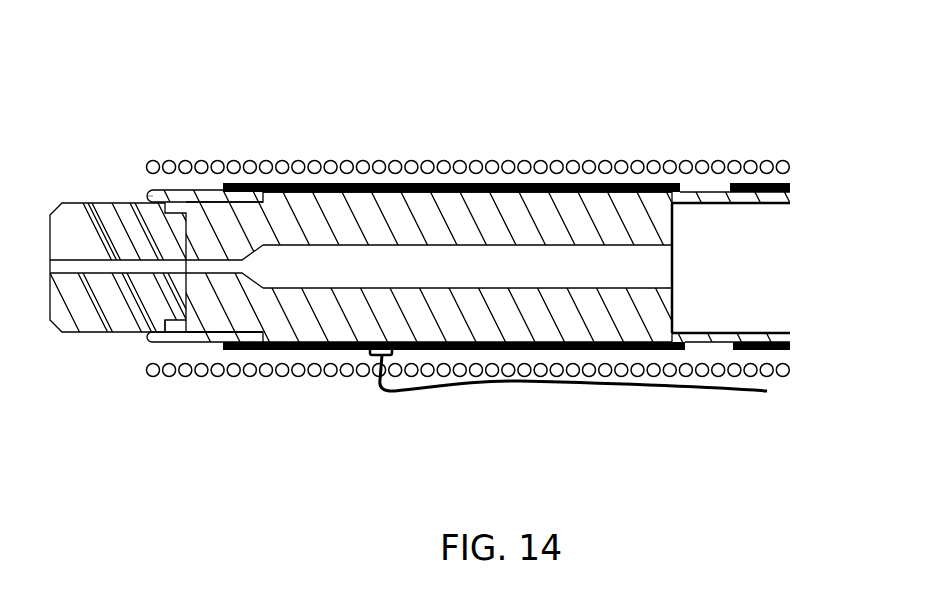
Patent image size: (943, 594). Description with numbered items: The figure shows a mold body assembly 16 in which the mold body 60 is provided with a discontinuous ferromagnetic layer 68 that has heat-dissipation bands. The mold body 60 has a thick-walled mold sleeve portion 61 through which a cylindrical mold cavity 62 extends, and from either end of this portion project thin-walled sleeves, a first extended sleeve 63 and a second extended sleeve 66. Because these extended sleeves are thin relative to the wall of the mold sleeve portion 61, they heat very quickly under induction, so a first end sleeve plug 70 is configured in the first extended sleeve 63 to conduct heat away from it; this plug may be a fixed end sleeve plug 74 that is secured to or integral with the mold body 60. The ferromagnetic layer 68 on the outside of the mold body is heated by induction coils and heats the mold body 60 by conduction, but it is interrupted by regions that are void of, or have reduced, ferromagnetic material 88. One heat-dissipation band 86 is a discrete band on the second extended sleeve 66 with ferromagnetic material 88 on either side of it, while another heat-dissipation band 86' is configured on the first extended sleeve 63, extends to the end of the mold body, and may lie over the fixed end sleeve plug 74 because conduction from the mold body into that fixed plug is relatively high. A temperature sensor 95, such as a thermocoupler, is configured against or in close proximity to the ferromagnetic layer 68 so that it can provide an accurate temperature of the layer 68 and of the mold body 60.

The mold body assembly 16 is at (372, 110).
The mold body 60 is at (465, 220).
The mold sleeve portion 61 is at (550, 212).
The mold cavity 62 is at (602, 258).
The first extended sleeve 63 is at (183, 343).
The second extended sleeve 66 is at (720, 345).
The ferromagnetic layer 68 is at (353, 190).
The first end sleeve plug 70 is at (208, 343).
The fixed end sleeve plug 74 is at (245, 341).
The heat-dissipation band 86 is at (746, 219).
The heat-dissipation band 86' is at (177, 142).
The ferromagnetic material 88 is at (640, 188).
The temperature sensor 95 is at (372, 357).